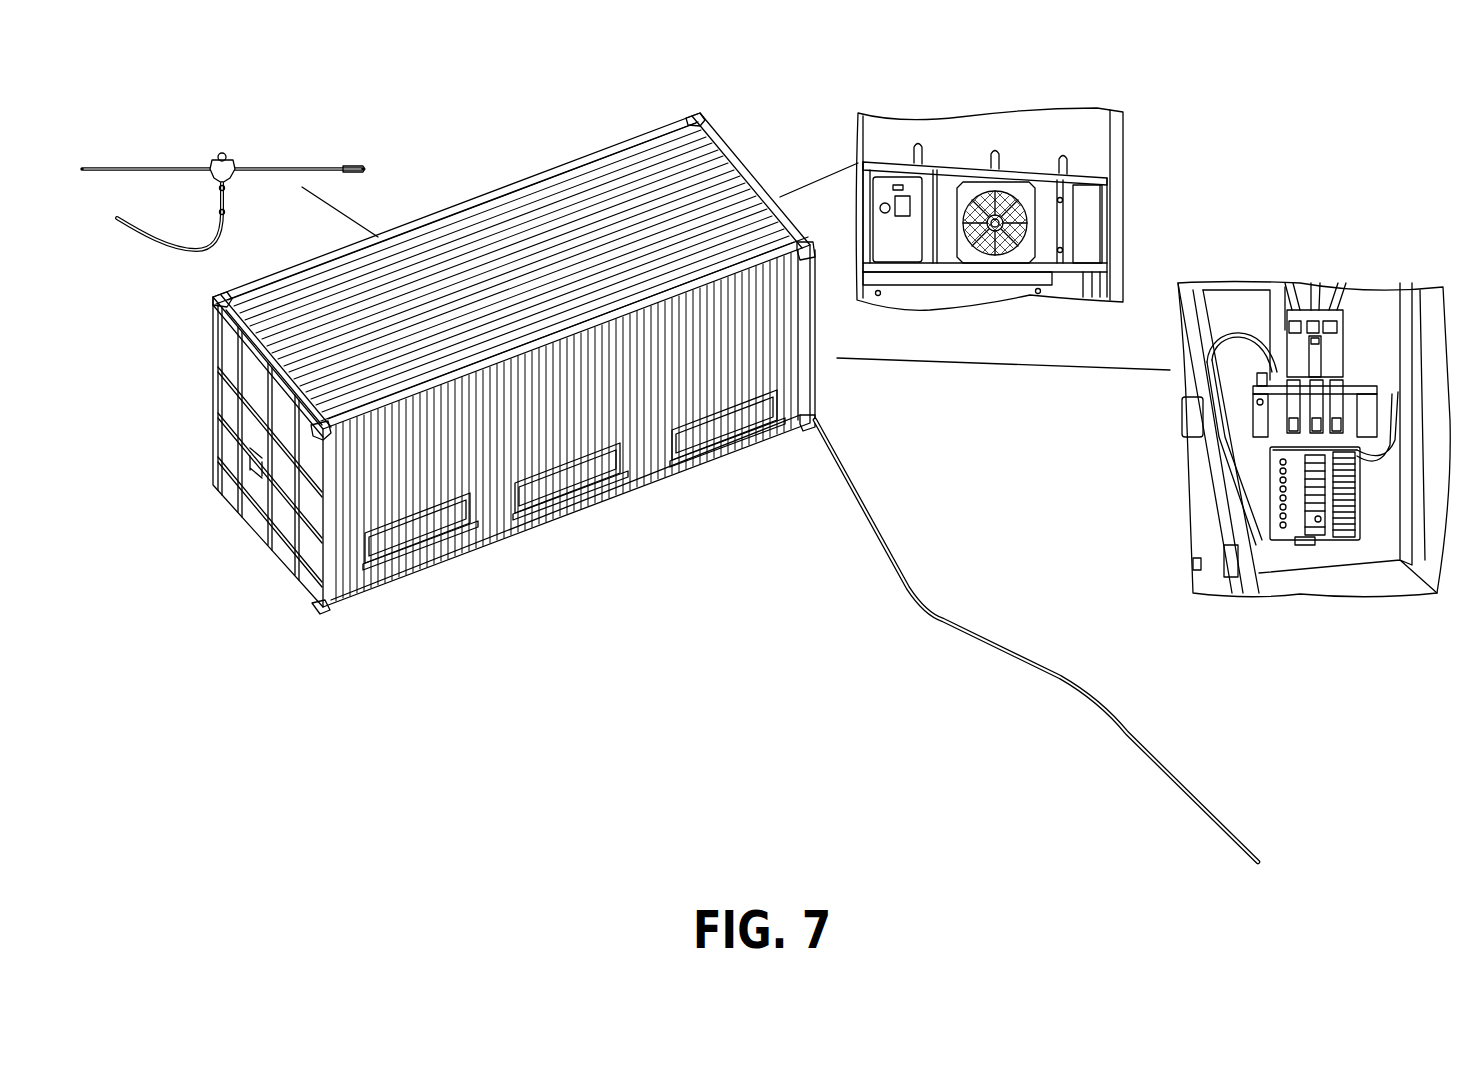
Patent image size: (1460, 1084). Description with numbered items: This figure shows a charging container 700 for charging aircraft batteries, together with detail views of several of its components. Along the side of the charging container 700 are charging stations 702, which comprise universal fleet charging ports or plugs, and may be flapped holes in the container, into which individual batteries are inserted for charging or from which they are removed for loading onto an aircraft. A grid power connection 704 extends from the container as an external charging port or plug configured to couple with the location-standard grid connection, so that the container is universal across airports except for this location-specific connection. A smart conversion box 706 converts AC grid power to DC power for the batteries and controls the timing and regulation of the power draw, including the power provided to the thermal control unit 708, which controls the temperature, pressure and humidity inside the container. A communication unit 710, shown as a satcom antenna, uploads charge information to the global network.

The charging container 700 is at (237, 487).
The charging stations 702 is at (470, 533).
The grid power connection 704 is at (813, 424).
The smart conversion box 706 is at (1310, 575).
The thermal control unit 708 is at (1092, 125).
The communication unit 710 is at (255, 170).